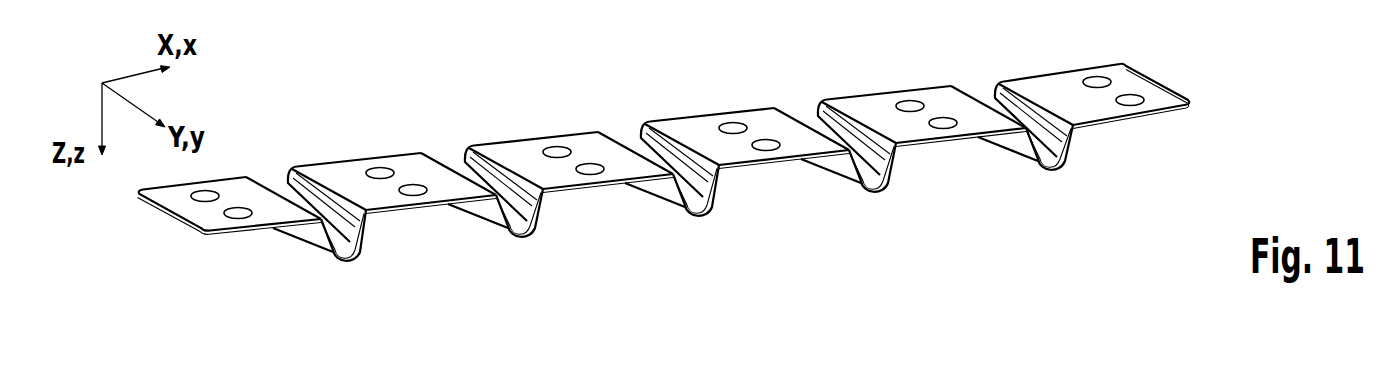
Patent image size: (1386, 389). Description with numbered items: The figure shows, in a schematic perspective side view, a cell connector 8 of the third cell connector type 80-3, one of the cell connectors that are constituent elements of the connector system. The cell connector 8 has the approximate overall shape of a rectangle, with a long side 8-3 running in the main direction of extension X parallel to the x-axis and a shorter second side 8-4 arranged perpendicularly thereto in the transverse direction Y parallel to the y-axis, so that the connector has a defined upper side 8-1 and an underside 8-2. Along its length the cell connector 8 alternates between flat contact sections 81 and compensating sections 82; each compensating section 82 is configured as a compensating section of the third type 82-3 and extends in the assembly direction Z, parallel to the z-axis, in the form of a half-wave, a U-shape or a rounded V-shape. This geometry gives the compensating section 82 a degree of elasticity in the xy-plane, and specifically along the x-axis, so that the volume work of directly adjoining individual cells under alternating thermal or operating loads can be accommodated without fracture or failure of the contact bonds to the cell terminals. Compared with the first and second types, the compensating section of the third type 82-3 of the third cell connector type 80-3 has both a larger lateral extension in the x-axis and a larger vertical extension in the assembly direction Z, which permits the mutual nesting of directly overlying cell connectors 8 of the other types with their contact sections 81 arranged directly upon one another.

The cell connector 8 is at (375, 119).
The third cell connector type 80-3 is at (711, 183).
The upper side 8-1 is at (1126, 73).
The underside 8-2 is at (1174, 119).
The long side 8-3 is at (544, 131).
The second side 8-4 is at (1189, 91).
The contact section 81 is at (313, 269).
The compensating section 82 is at (691, 226).
The compensating section of the third type 82-3 is at (387, 260).